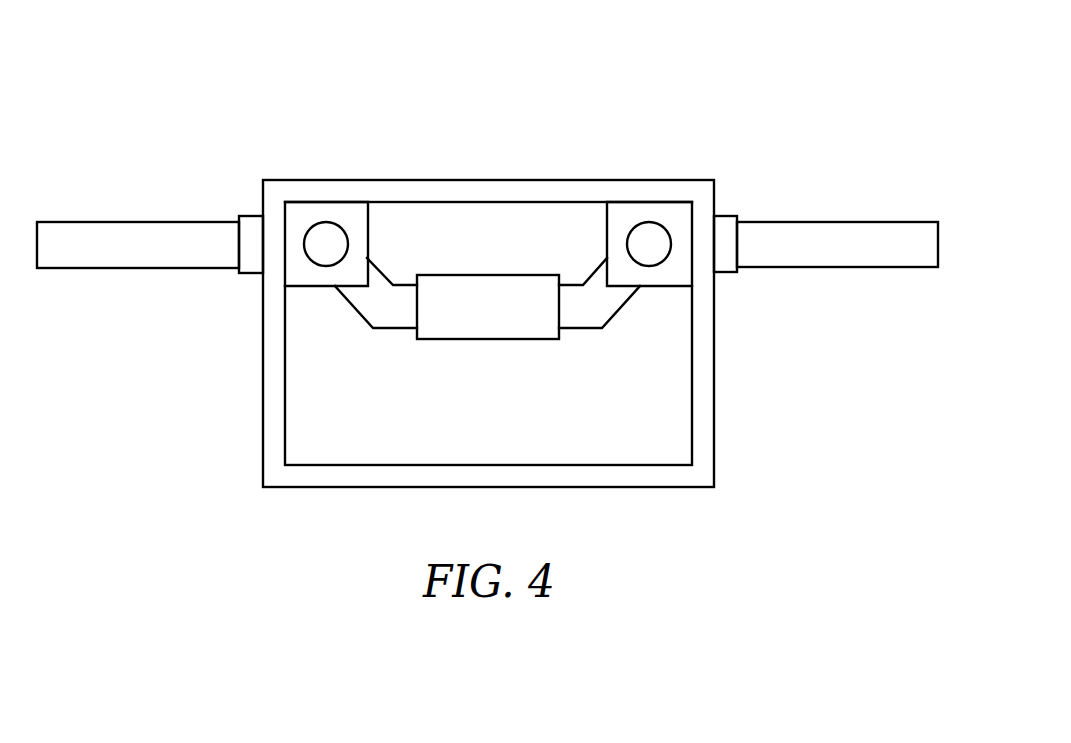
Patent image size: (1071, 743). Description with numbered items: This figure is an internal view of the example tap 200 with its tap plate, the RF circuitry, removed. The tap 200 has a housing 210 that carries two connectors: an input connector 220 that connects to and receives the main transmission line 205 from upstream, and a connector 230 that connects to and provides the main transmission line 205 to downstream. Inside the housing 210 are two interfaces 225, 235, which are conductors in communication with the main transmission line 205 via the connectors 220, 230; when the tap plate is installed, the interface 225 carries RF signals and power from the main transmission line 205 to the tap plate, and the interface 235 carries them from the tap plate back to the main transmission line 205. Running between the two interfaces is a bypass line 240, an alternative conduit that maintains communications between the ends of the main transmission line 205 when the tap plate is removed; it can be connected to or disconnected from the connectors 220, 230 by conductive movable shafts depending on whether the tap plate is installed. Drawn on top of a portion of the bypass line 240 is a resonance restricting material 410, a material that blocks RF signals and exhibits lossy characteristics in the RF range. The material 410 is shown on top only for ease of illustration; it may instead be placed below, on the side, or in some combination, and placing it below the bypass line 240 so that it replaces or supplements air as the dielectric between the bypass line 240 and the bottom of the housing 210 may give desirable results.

The tap 200 is at (712, 83).
The main transmission line 205 is at (137, 220).
The housing 210 is at (485, 178).
The input connector 220 is at (250, 215).
The interface 225 is at (327, 226).
The connector 230 is at (727, 215).
The interface 235 is at (650, 226).
The bypass line 240 is at (375, 267).
The resonance restricting material 410 is at (487, 285).